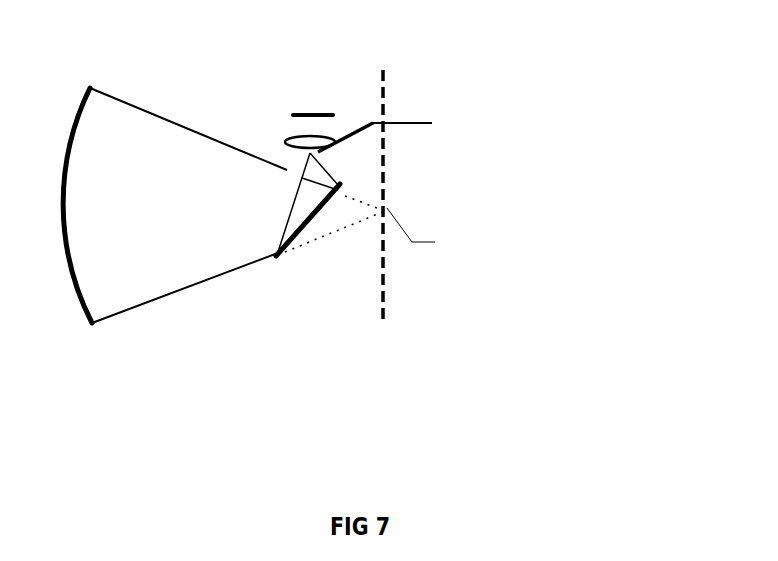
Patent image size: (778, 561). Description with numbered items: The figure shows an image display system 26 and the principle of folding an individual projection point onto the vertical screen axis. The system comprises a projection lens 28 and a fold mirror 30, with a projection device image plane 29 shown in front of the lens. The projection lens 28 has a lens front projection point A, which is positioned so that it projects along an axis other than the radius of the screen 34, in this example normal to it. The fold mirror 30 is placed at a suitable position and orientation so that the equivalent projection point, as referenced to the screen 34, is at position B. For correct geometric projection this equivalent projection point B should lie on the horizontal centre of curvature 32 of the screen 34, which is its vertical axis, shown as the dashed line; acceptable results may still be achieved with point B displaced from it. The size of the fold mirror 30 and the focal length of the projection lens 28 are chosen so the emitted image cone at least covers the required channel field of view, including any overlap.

The image display system 26 is at (476, 80).
The projection lens 28 is at (352, 79).
The projection device image plane 29 is at (274, 63).
The fold mirror 30 is at (273, 291).
The horizontal centre of curvature 32 is at (525, 288).
The screen 34 is at (72, 297).